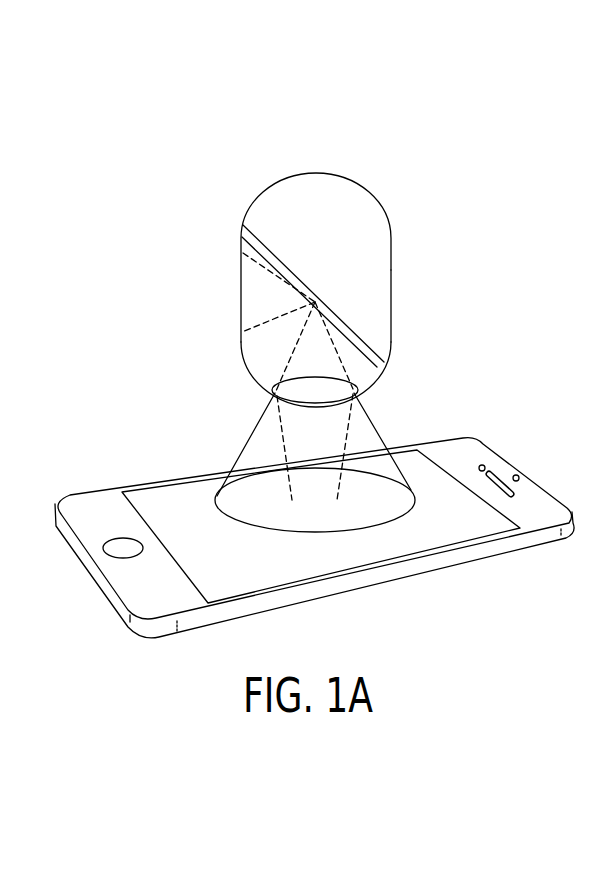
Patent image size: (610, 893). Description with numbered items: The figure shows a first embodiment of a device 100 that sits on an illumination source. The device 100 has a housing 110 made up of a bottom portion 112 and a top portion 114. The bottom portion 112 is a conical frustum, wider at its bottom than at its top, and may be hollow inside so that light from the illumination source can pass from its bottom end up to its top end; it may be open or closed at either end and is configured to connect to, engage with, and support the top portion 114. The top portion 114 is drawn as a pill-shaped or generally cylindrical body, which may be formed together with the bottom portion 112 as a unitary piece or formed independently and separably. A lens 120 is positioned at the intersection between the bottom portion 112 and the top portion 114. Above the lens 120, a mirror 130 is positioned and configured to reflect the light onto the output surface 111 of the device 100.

The device 100 is at (166, 161).
The housing 110 is at (216, 278).
The output surface 111 is at (241, 297).
The top portion 114 is at (392, 296).
The mirror 130 is at (288, 262).
The lens 120 is at (292, 394).
The bottom portion 112 is at (370, 437).